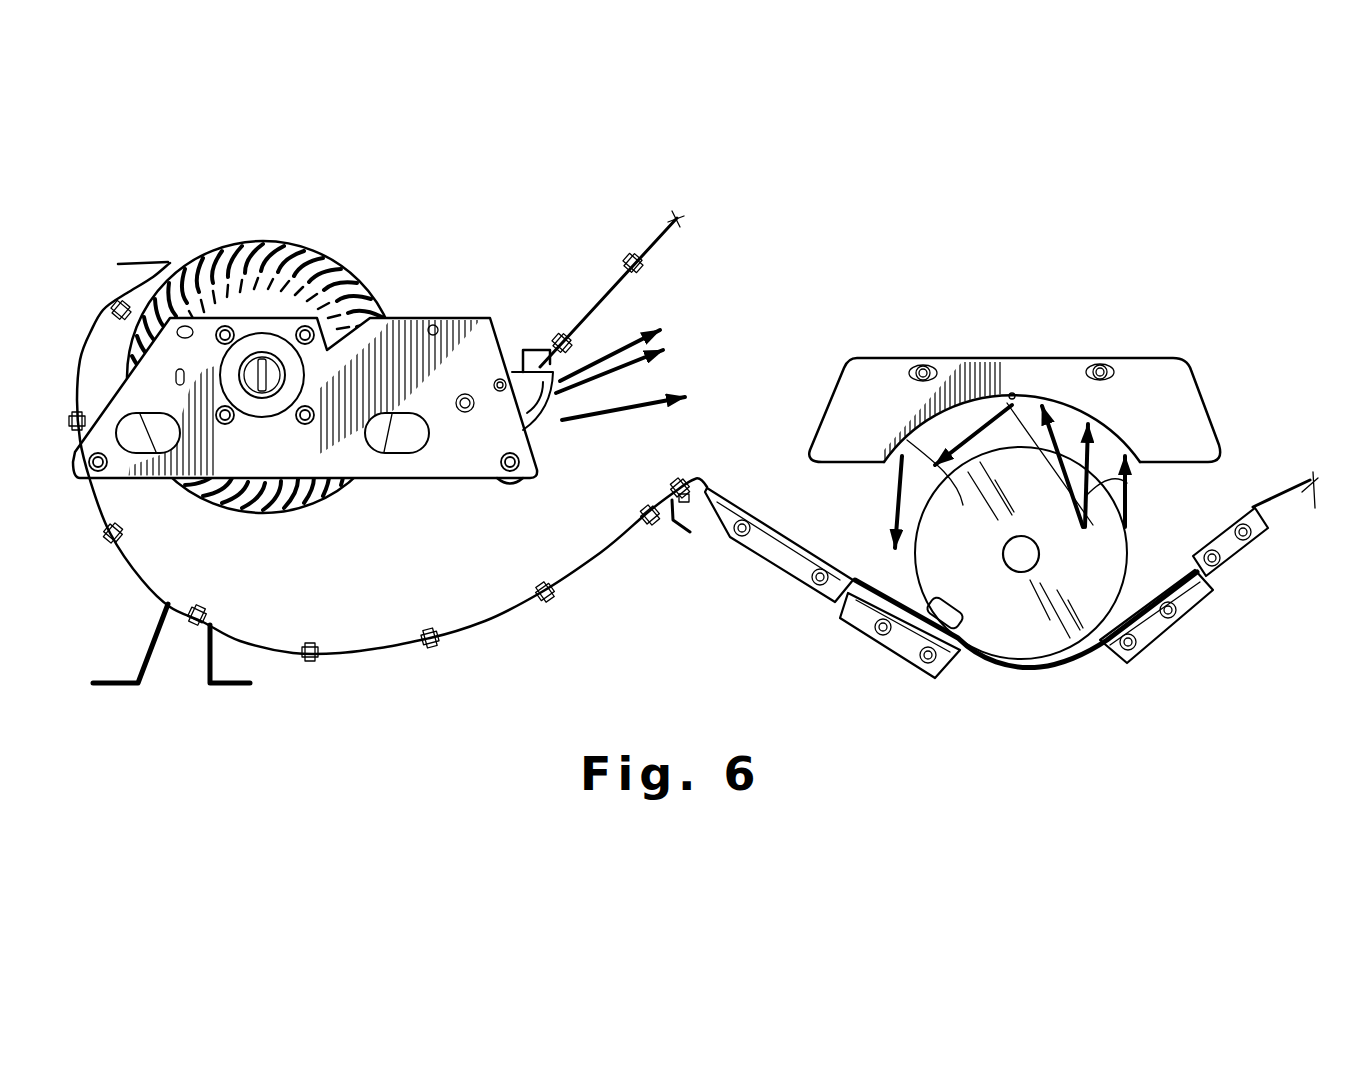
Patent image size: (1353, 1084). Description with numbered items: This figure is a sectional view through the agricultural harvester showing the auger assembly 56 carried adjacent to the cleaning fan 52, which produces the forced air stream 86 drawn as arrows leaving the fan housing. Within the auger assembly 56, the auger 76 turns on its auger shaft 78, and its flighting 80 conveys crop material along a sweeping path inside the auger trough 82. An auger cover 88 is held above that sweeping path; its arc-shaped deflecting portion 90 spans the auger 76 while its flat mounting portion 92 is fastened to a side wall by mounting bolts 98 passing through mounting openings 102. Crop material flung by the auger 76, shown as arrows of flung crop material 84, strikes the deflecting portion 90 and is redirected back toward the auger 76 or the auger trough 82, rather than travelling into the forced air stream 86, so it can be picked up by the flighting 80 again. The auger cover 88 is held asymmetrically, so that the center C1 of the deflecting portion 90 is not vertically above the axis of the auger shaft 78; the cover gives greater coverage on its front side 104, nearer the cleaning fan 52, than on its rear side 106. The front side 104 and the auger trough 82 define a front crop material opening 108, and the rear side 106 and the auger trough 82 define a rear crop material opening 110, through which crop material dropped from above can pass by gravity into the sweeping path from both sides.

The cleaning fan 52 is at (367, 300).
The auger assembly 56 is at (994, 369).
The auger 76 is at (924, 501).
The auger shaft 78 is at (1041, 554).
The flighting 80 is at (1036, 505).
The auger trough 82 is at (1066, 664).
The flung crop material 84 is at (917, 557).
The forced air stream 86 is at (648, 398).
The auger cover 88 is at (1021, 350).
The deflecting portion 90 is at (1000, 400).
The mounting portion 92 is at (884, 407).
The mounting bolts 98 is at (923, 366).
The mounting openings 102 is at (943, 360).
The front side 104 is at (947, 486).
The rear side 106 is at (1107, 434).
The front crop material opening 108 is at (878, 525).
The rear crop material opening 110 is at (1163, 553).
The center of the deflecting portion C1 is at (1012, 384).